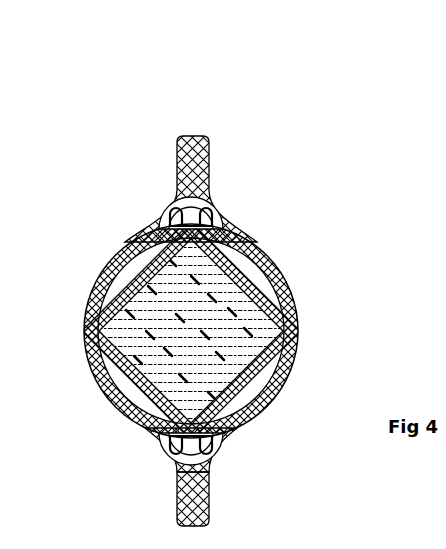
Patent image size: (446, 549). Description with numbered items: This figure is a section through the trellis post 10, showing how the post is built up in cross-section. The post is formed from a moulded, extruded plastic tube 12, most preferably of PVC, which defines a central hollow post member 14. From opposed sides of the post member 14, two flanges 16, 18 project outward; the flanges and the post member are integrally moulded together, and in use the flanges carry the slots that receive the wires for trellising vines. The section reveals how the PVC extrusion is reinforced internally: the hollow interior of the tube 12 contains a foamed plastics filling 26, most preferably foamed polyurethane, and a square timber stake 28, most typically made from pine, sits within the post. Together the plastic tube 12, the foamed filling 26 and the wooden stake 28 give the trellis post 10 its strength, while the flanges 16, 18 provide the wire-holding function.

The trellis post 10 is at (308, 249).
The moulded plastic tube 12 is at (160, 450).
The central hollow post member 14 is at (298, 331).
The flange 16 is at (181, 137).
The flange 18 is at (198, 502).
The foamed plastics filling 26 is at (233, 232).
The square timber stake 28 is at (133, 413).